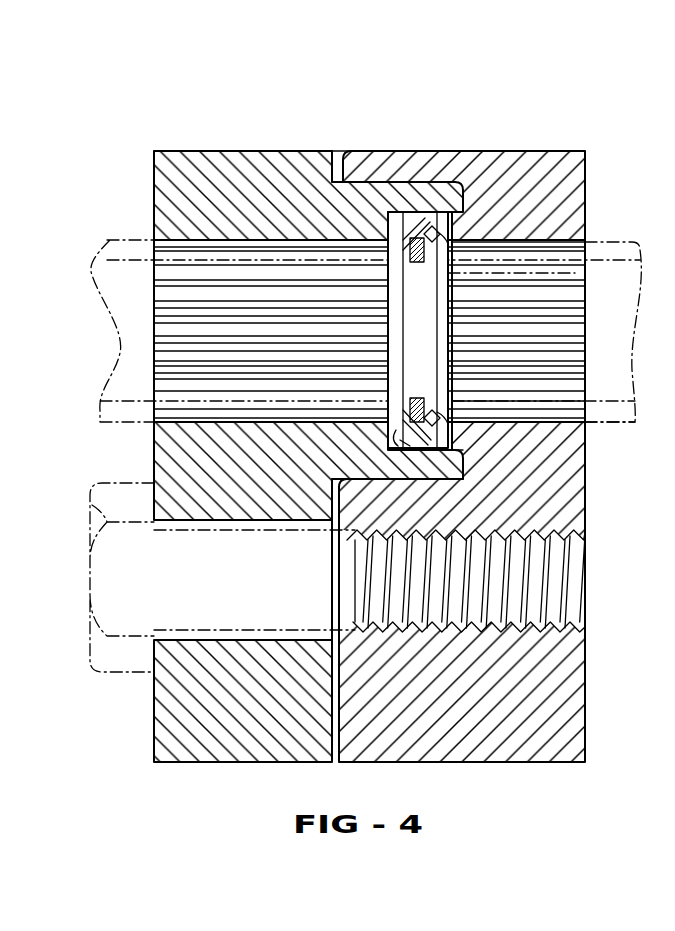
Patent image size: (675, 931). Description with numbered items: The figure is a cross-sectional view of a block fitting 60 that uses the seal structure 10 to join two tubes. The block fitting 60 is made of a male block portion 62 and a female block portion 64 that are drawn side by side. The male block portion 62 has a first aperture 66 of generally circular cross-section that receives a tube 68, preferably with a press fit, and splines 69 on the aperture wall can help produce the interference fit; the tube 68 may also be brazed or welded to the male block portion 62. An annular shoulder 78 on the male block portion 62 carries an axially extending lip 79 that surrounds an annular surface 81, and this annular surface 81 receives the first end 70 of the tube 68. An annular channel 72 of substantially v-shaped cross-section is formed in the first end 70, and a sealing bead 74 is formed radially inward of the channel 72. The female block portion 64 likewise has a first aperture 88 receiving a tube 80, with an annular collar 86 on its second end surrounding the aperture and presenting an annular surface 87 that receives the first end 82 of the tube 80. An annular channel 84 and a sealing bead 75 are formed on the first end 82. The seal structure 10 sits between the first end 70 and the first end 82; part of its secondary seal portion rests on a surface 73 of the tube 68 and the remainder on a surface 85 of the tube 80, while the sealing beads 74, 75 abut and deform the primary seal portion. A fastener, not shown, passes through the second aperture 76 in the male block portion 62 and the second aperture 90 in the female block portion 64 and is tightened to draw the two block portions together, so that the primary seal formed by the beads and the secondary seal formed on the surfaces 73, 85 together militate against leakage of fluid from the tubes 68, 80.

The seal structure 10 is at (415, 318).
The block fitting 60 is at (568, 96).
The male block portion 62 is at (166, 166).
The female block portion 64 is at (572, 162).
The first aperture 66 is at (250, 240).
The tube 68 is at (102, 420).
The splines 69 is at (155, 358).
The first end 70 is at (395, 212).
The annular channel 72 is at (417, 213).
The surface 73 is at (405, 466).
The sealing bead 74 is at (340, 272).
The sealing bead 75 is at (575, 273).
The second aperture 76 is at (198, 578).
The annular shoulder 78 is at (385, 477).
The lip 79 is at (420, 460).
The tube 80 is at (625, 421).
The annular surface 81 is at (398, 444).
The first end 82 is at (447, 218).
The annular channel 84 is at (438, 228).
The surface 85 is at (460, 410).
The annular collar 86 is at (413, 162).
The annular surface 87 is at (460, 236).
The first aperture 88 is at (560, 248).
The second aperture 90 is at (560, 590).